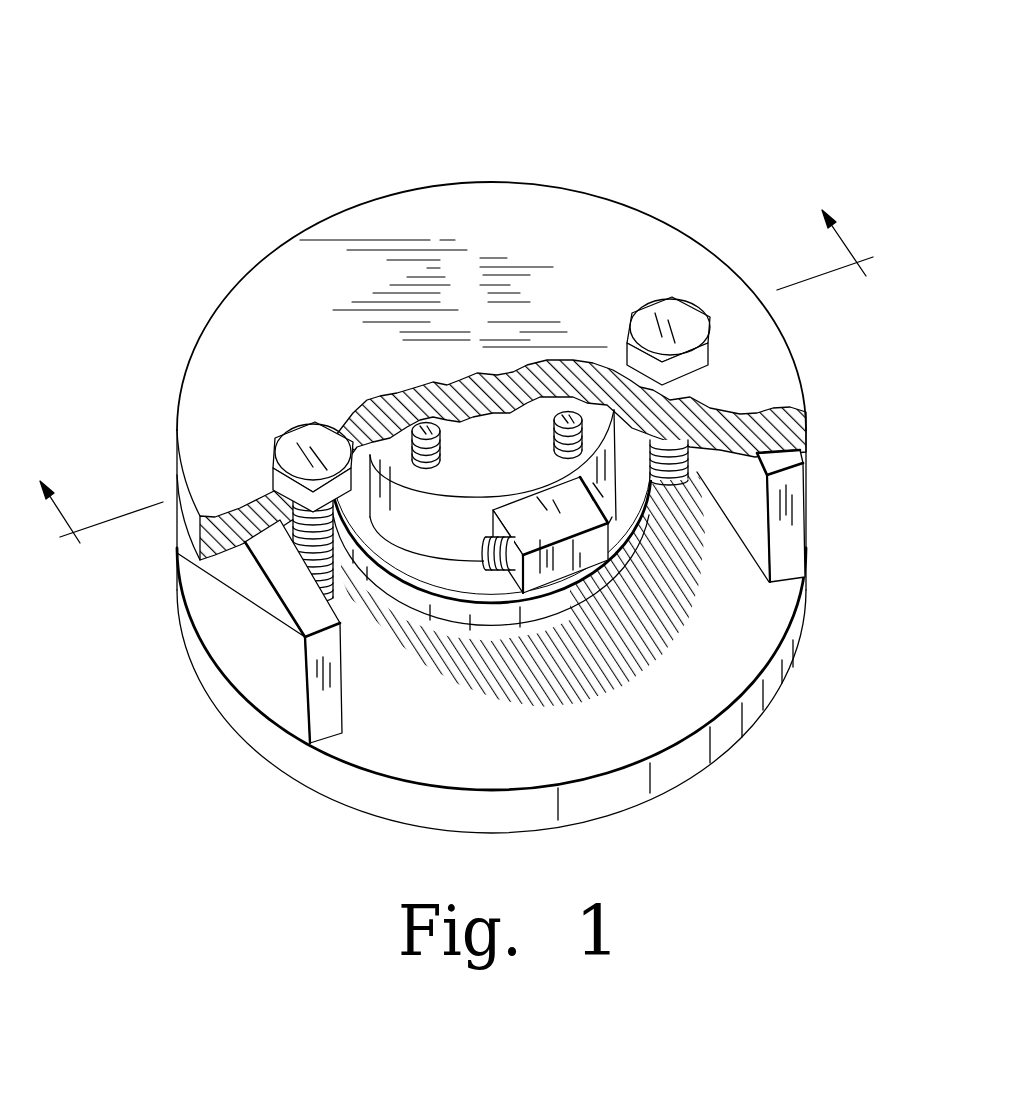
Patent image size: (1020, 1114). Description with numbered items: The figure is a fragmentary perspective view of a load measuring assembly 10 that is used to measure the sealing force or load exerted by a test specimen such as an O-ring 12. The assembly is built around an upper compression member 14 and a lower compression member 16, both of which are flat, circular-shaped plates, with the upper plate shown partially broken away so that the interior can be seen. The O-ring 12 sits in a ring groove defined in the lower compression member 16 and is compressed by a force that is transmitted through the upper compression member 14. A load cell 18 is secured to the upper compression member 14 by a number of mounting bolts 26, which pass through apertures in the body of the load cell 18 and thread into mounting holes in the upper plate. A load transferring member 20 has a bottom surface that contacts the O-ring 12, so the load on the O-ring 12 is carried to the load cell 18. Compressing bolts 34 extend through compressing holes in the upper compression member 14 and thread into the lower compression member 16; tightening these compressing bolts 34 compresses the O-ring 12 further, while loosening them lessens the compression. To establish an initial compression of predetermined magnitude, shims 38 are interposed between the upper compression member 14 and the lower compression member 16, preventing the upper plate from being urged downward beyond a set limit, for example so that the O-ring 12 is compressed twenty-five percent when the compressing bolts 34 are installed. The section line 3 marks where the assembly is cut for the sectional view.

The load measuring assembly 10 is at (620, 117).
The O-ring 12 is at (557, 624).
The upper compression member 14 is at (620, 227).
The lower compression member 16 is at (763, 636).
The load cell 18 is at (418, 532).
The load transferring member 20 is at (500, 620).
The mounting bolts 26 is at (566, 412).
The compressing bolts 34 is at (679, 313).
The shims 38 is at (252, 623).
The section line 3- 3 is at (461, 397).